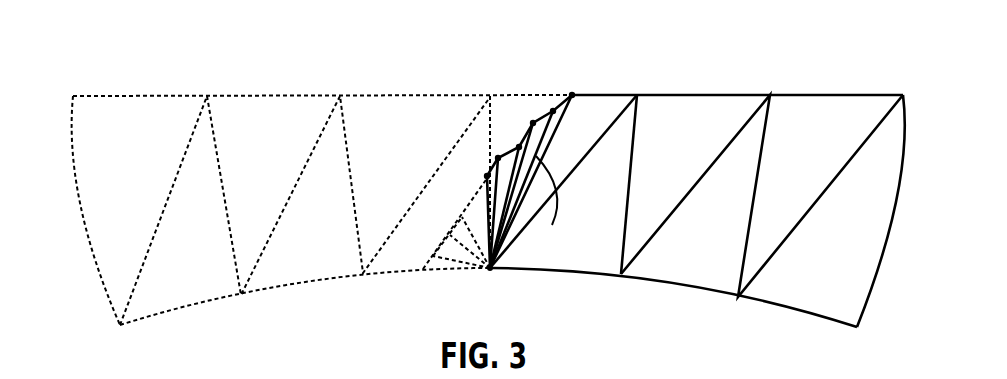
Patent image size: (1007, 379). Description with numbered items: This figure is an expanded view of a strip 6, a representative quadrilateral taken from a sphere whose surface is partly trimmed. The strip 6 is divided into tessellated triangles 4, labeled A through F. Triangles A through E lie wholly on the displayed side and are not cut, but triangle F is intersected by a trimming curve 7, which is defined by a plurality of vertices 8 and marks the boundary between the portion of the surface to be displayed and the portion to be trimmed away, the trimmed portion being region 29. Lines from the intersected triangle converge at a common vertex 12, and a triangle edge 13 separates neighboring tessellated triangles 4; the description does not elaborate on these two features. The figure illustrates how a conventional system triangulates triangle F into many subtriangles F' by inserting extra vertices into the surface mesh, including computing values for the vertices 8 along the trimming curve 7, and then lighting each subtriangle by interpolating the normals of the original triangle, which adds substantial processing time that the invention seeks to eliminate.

The tessellated triangles 4 is at (833, 102).
The strip 6 is at (82, 203).
The trimming curve 7 is at (513, 150).
The vertices 8 is at (545, 100).
The apex vertex 12 is at (490, 270).
The fold line 13 is at (637, 95).
The region 29 is at (520, 98).